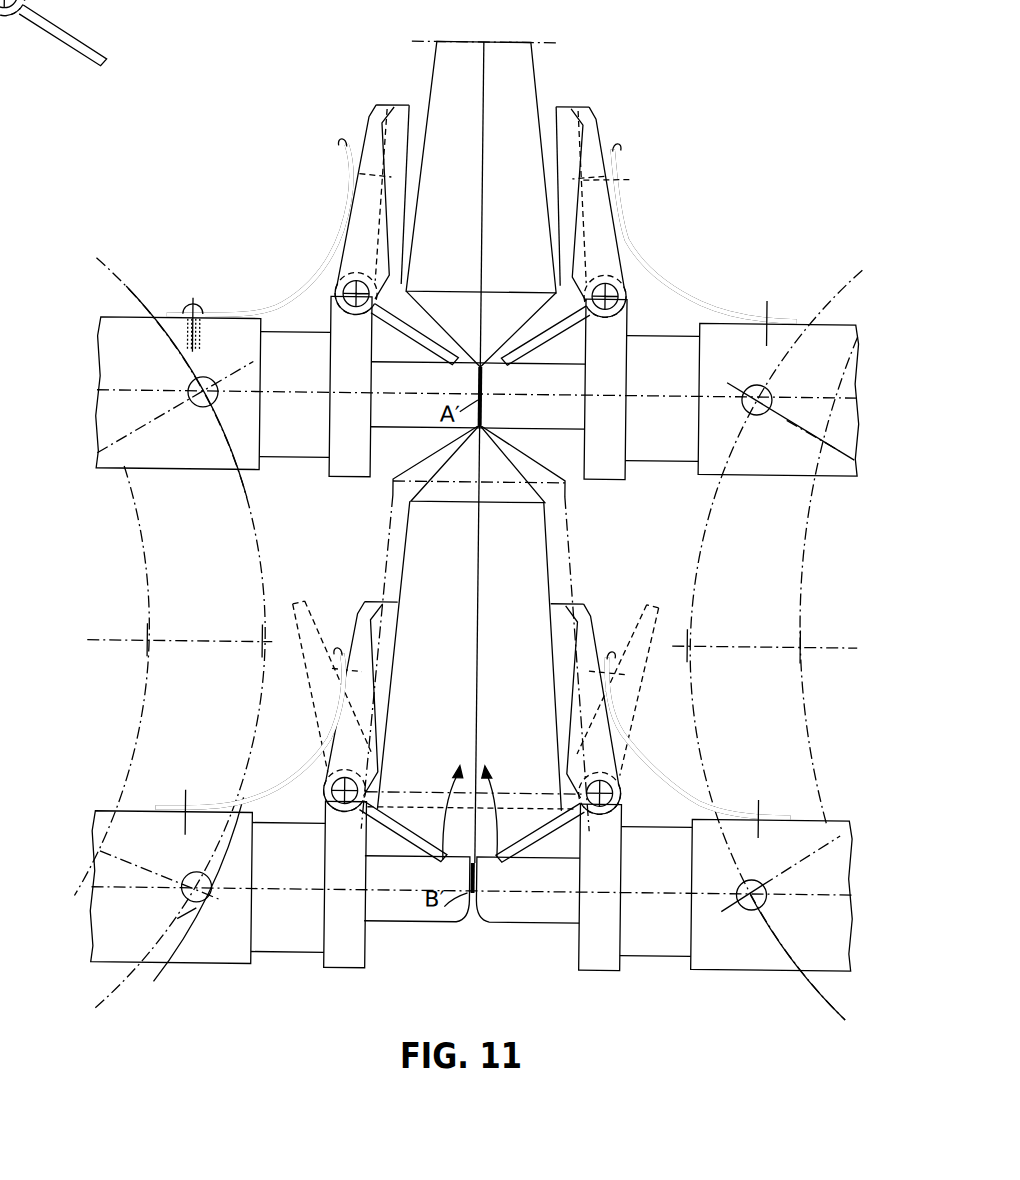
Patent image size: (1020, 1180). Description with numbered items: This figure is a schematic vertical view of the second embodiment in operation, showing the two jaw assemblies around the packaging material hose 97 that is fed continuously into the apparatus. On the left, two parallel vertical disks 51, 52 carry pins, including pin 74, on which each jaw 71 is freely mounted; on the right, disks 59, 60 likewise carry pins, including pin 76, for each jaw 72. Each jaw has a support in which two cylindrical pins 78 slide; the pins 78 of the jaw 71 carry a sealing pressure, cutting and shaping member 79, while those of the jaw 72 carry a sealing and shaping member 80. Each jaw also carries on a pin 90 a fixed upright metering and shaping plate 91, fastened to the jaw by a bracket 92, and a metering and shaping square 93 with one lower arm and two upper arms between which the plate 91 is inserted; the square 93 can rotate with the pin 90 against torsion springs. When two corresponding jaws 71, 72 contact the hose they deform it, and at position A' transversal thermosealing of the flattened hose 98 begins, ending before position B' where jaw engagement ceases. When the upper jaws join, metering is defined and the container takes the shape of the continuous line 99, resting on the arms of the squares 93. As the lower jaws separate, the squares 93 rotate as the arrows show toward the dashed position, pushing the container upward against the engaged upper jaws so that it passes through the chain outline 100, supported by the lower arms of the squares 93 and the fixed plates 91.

The disk 51 is at (148, 578).
The disk 52 is at (262, 578).
The disk 59 is at (800, 598).
The disk 60 is at (700, 553).
The jaw 71 is at (121, 314).
The jaw 72 is at (814, 320).
The pin 74 is at (211, 380).
The pin 76 is at (748, 384).
The cylindrical pin 78 is at (287, 450).
The sealing pressure, cutting and shaping member 79 is at (404, 418).
The sealing and shaping member 80 is at (548, 418).
The pin 90 is at (333, 300).
The metering and shaping plate 91 is at (368, 125).
The bracket 92 is at (312, 268).
The metering and shaping square 93 is at (402, 115).
The packaging material hose 97 is at (536, 66).
The flattened hose 98 is at (483, 400).
The container outline (continuous line) 99 is at (550, 536).
The chain outline 100 is at (392, 498).